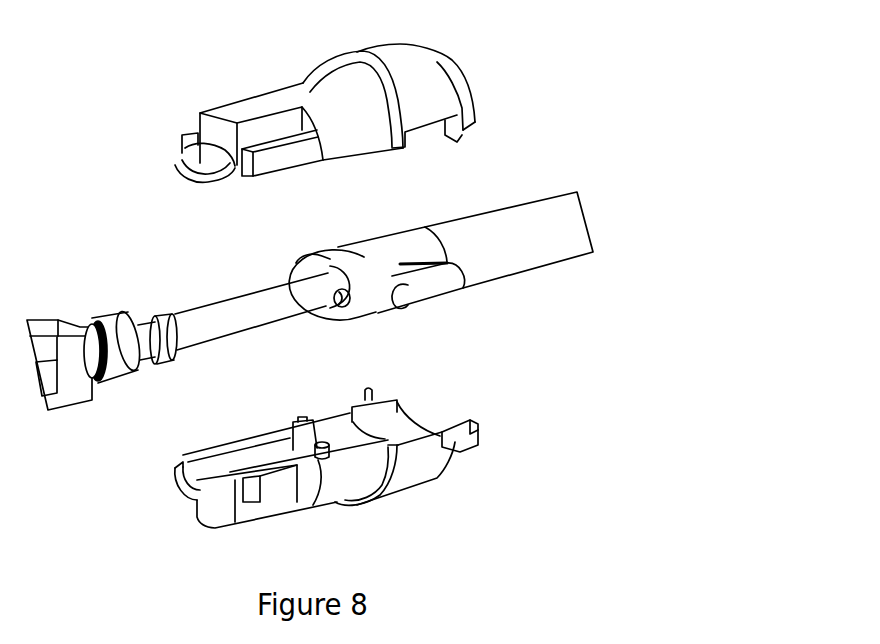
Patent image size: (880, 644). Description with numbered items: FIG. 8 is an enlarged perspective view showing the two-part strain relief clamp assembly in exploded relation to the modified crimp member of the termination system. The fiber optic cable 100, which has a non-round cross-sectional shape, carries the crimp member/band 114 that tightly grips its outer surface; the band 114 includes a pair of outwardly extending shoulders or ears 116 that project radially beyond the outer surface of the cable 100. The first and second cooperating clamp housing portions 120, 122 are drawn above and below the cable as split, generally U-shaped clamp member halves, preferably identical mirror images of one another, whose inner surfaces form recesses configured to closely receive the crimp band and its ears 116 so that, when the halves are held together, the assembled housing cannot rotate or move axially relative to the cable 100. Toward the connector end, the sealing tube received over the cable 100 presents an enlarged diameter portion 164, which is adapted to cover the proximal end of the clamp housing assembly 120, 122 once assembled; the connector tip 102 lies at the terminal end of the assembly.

The fiber optic cable 100 is at (567, 248).
The connector tip 102 is at (35, 317).
The crimp member/band 114 is at (400, 240).
The outwardly extending shoulders or ears 116 is at (307, 252).
The first clamp housing portion 120 is at (407, 63).
The second clamp housing portion 122 is at (437, 480).
The enlarged diameter portion 164 is at (113, 370).